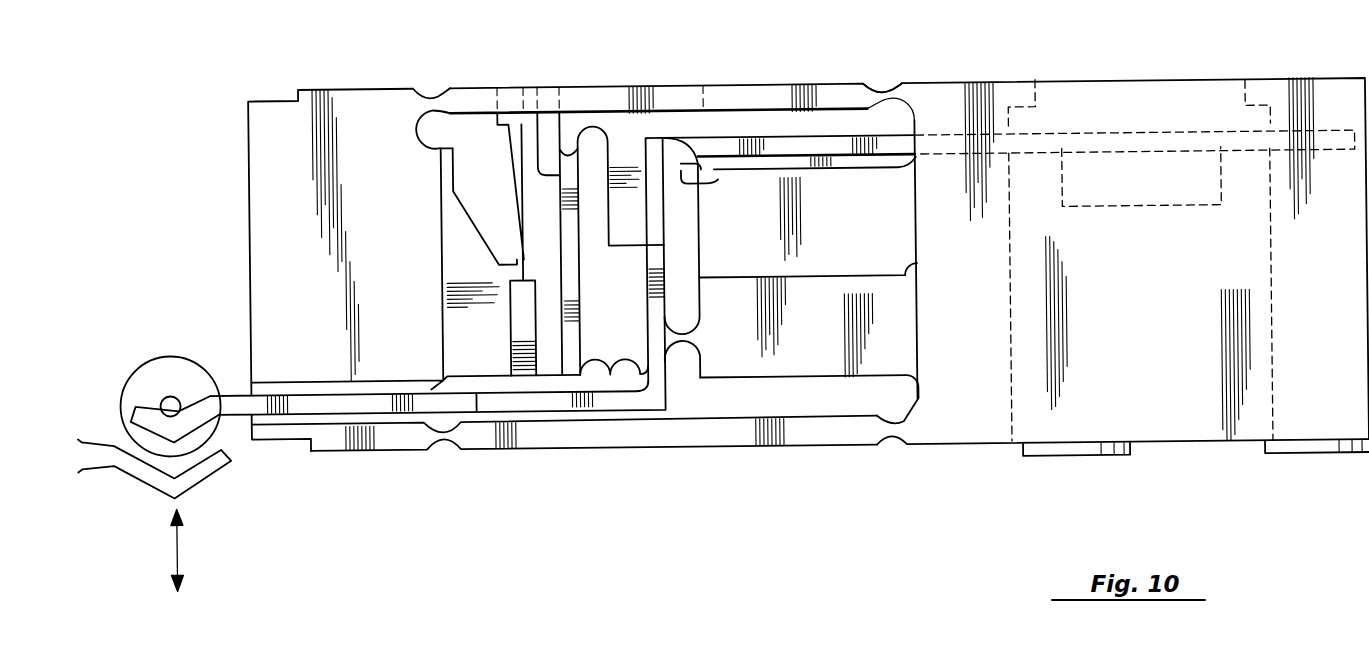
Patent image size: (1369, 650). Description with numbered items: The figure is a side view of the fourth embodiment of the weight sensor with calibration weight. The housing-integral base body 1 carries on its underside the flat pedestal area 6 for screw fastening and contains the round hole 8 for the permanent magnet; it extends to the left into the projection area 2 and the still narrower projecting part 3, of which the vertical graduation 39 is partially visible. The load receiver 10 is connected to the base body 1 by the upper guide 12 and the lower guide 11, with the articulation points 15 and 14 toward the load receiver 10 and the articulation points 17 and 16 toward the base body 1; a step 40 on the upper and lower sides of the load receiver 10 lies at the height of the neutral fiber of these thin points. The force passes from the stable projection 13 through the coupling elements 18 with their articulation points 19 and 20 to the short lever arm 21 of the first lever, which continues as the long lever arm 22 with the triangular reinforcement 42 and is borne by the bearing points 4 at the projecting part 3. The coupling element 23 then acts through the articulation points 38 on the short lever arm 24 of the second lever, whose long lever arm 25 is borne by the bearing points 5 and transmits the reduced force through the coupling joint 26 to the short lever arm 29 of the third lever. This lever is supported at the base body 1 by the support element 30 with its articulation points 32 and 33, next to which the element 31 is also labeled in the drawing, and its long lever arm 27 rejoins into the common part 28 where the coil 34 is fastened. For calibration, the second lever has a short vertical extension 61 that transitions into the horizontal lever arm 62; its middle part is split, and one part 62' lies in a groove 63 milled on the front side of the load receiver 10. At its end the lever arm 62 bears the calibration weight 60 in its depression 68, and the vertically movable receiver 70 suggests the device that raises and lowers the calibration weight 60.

The base body 1 is at (1174, 426).
The projection area 2 is at (735, 385).
The projecting part 3 is at (598, 116).
The bearing points 4 is at (590, 128).
The bearing points 5 is at (699, 325).
The pedestal area 6 is at (1068, 450).
The round hole 8 is at (1018, 295).
The load receiver 10 is at (329, 440).
The lower guide 11 is at (815, 434).
The upper guide 12 is at (827, 100).
The projection 13 is at (460, 349).
The articulation point 14 is at (440, 444).
The articulation point 15 is at (437, 96).
The articulation point 16 is at (889, 438).
The articulation point 17 is at (888, 95).
The coupling elements 18 is at (520, 189).
The articulation point 19 is at (520, 258).
The articulation point 20 is at (520, 150).
The short lever arm 21 is at (523, 116).
The long lever arm 22 is at (570, 284).
The coupling element 23 is at (606, 374).
The short lever arm 24 is at (661, 366).
The long lever arm 25 is at (654, 226).
The partial coupling joint 26 is at (680, 116).
The long lever arm 27 is at (774, 140).
The common part 28 is at (1100, 140).
The short lever arm 29 is at (699, 180).
The support element 30 is at (802, 173).
The spring end 31 is at (906, 178).
The articulation point 32 is at (723, 177).
The articulation point 33 is at (909, 172).
The coil 34 is at (1199, 216).
The articulation points 38 is at (633, 362).
The graduation 39 is at (718, 114).
The step 40 is at (261, 100).
The triangular reinforcement 42 is at (506, 131).
The calibration weight 60 is at (148, 375).
The vertical extension 61 is at (658, 406).
The horizontal lever arm 62 is at (429, 445).
The lever arm part 62' is at (267, 415).
The groove 63 is at (307, 388).
The depression 68 is at (158, 428).
The receiver 70 is at (195, 480).